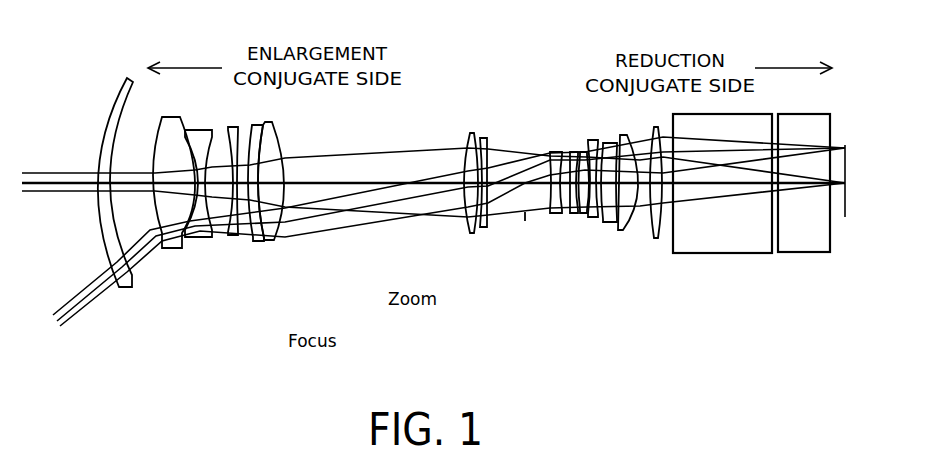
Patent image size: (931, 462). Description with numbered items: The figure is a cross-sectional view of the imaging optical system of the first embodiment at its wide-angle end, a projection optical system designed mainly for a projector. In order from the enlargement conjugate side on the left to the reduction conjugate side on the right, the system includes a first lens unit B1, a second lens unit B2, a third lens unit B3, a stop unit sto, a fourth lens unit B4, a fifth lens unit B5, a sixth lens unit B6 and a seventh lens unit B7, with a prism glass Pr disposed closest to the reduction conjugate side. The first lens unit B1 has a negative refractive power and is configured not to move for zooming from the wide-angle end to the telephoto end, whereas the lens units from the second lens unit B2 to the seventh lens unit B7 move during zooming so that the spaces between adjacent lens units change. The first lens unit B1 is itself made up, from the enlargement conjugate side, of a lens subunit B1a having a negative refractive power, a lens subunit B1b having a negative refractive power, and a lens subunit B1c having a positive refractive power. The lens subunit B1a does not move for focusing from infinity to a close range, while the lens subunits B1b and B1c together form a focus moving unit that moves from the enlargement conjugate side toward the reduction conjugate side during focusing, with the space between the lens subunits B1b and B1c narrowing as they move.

The first lens unit B1 is at (196, 232).
The lens subunit (first lens subunit) B1a is at (213, 312).
The lens subunit (second lens subunit) B1b is at (242, 362).
The lens subunit (third lens subunit) B1c is at (270, 247).
The second lens unit B2 is at (441, 327).
The third lens unit B3 is at (471, 327).
The fourth lens unit B4 is at (523, 327).
The fifth lens unit B5 is at (553, 327).
The sixth lens unit B6 is at (591, 327).
The seventh lens unit B7 is at (663, 248).
The stop unit sto is at (527, 150).
The prism glass Pr is at (845, 260).